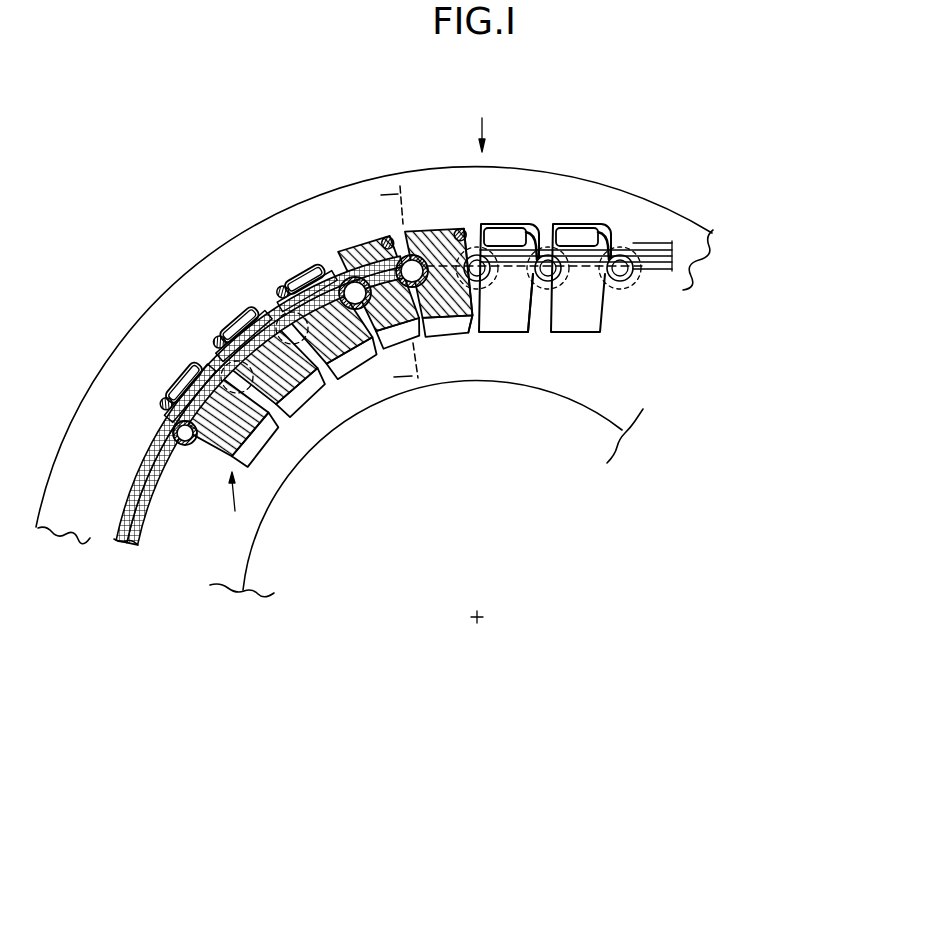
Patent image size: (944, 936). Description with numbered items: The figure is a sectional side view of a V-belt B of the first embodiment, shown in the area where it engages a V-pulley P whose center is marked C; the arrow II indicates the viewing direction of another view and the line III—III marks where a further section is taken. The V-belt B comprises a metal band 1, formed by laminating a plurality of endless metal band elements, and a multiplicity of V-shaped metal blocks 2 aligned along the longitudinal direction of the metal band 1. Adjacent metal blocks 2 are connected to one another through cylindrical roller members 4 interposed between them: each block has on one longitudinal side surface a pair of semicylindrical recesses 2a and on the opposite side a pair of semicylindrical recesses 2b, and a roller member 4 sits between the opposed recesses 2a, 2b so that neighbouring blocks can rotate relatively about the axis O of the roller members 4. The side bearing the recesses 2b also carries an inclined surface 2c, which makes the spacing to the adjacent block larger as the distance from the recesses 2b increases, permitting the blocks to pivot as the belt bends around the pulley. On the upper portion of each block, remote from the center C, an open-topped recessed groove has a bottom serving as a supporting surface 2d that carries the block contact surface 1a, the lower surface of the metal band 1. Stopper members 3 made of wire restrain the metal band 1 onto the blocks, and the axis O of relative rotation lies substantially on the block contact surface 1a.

The V-pulley P is at (170, 297).
The metal band 1 is at (120, 503).
The block contact surface 1a is at (150, 495).
The V-shaped metal block 2 is at (577, 322).
The semicylindrical recess 2a is at (421, 325).
The semicylindrical recess 2b is at (466, 322).
The inclined surface 2c is at (531, 318).
The supporting surface 2d is at (446, 232).
The stopper member 3 is at (607, 234).
The roller member 4 is at (462, 270).
The axis of the roller members O is at (412, 255).
The V-belt B is at (234, 506).
The center of V-pulley C is at (479, 621).
The direction of arrow II is at (480, 117).
The line III— III is at (385, 287).